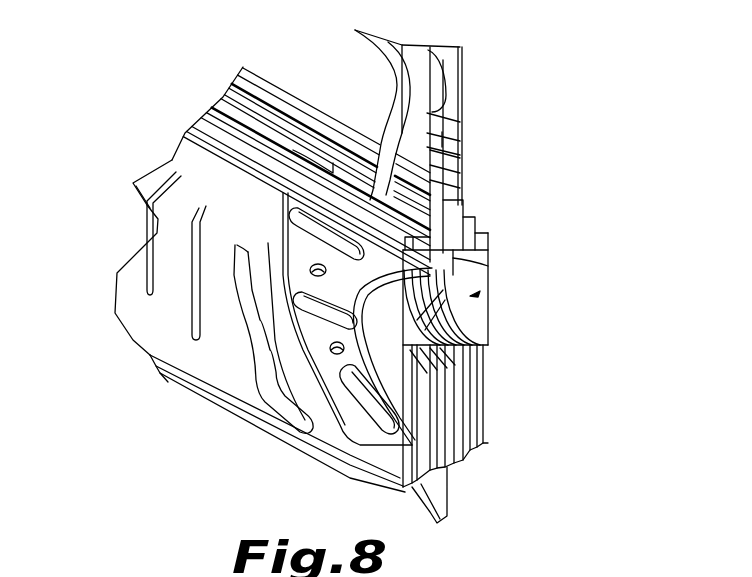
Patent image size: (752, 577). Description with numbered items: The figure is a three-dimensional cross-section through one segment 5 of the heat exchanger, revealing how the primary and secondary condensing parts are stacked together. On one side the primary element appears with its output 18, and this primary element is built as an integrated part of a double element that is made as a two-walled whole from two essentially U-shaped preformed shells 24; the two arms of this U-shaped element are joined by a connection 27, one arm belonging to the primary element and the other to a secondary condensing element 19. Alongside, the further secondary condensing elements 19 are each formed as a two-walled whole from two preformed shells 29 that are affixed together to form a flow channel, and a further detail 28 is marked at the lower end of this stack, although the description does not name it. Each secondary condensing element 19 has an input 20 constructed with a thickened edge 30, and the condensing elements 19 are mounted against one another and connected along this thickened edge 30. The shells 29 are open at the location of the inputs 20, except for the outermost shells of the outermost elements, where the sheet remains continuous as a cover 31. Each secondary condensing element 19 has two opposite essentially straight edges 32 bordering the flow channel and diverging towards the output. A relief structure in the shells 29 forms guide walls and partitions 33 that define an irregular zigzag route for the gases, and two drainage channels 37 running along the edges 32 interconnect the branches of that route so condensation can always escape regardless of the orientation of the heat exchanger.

The segment 5 is at (566, 51).
The output 18 is at (470, 205).
The secondary condensing element 19 is at (233, 175).
The input 20 is at (453, 270).
The shell 24 is at (438, 85).
The connection 27 is at (453, 135).
The lower tip 28 is at (430, 518).
The shell 29 is at (407, 486).
The thickened edge 30 is at (470, 250).
The cover 31 is at (407, 345).
The straight edge 32 is at (200, 127).
The guide walls and partitions 33 is at (307, 301).
The drainage channel 37 is at (172, 380).